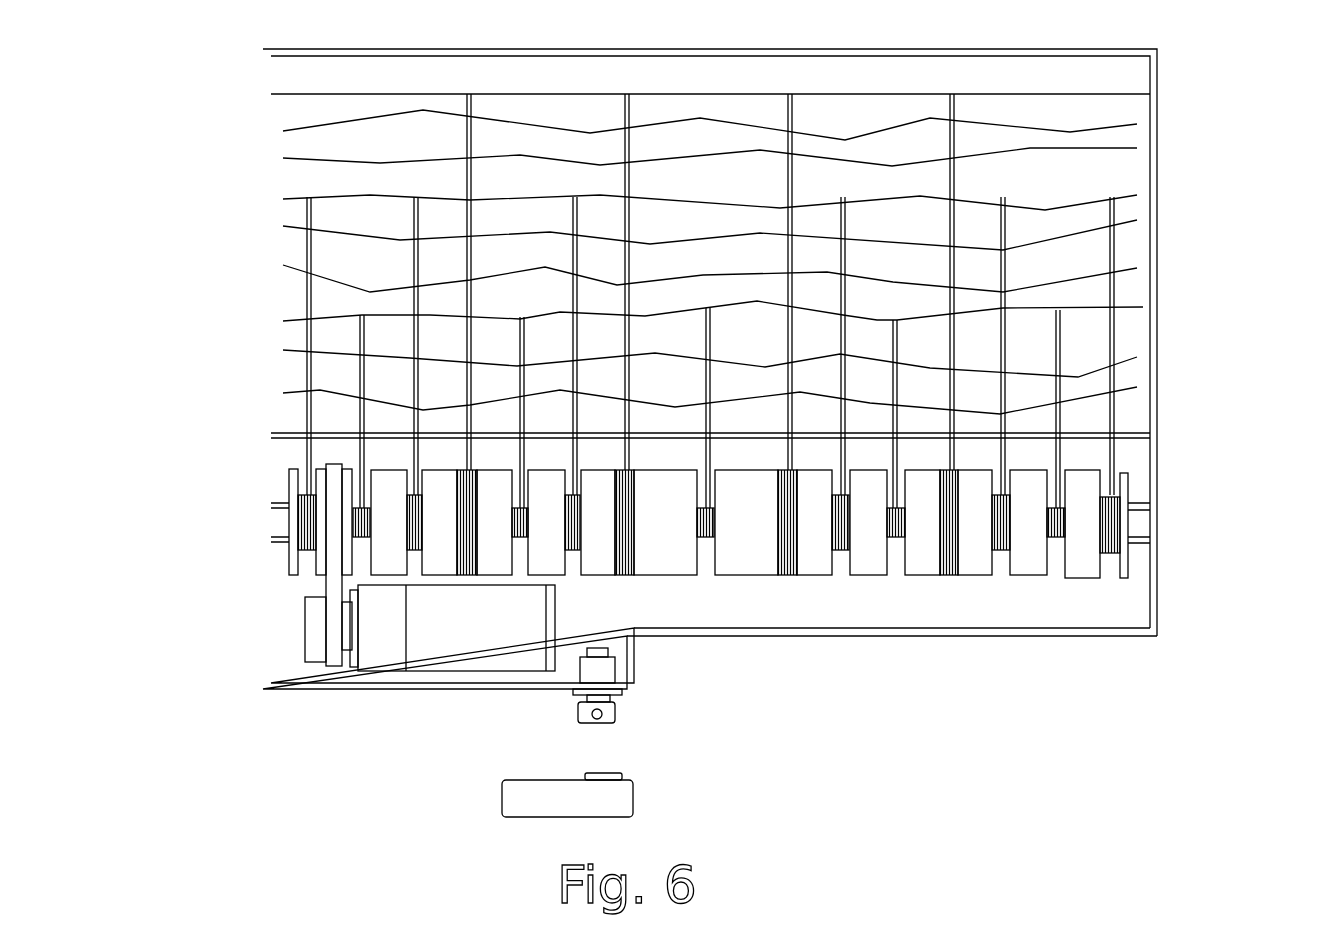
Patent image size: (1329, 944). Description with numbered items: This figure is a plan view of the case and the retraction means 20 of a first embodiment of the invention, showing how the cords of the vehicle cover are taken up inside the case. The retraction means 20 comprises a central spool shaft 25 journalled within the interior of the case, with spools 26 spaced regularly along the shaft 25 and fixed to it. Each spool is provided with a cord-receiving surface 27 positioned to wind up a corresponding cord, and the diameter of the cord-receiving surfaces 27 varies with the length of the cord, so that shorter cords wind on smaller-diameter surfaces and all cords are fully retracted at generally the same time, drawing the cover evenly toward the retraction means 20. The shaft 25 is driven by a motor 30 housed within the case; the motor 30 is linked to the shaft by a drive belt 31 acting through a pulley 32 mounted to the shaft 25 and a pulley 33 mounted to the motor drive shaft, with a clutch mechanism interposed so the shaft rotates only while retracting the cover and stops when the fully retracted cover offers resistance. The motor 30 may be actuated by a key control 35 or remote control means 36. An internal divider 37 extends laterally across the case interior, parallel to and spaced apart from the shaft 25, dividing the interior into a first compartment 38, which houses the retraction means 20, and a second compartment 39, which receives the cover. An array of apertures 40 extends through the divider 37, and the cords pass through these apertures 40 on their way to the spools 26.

The retraction means 20 is at (263, 520).
The central spool shaft 25 is at (1132, 529).
The spools 26 is at (1100, 580).
The cord-receiving surface 27 is at (1005, 560).
The motor 30 is at (483, 643).
The drive belt 31 is at (328, 583).
The pulley 32 is at (312, 562).
The pulley 33 is at (313, 637).
The key control 35 is at (607, 703).
The remote control means 36 is at (613, 802).
The internal divider 37 is at (1133, 437).
The first compartment 38 is at (1133, 605).
The second compartment 39 is at (1133, 342).
The apertures 40 is at (1110, 445).